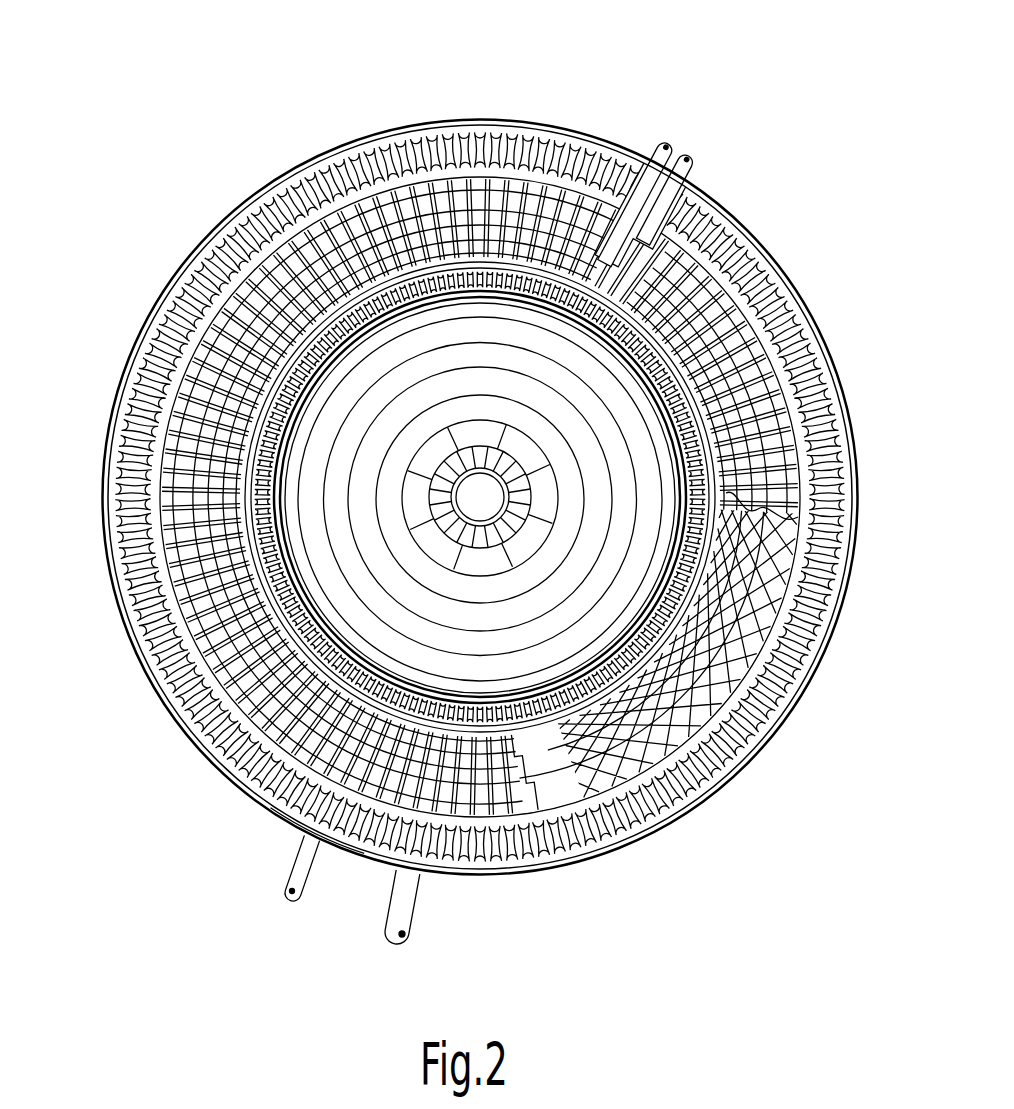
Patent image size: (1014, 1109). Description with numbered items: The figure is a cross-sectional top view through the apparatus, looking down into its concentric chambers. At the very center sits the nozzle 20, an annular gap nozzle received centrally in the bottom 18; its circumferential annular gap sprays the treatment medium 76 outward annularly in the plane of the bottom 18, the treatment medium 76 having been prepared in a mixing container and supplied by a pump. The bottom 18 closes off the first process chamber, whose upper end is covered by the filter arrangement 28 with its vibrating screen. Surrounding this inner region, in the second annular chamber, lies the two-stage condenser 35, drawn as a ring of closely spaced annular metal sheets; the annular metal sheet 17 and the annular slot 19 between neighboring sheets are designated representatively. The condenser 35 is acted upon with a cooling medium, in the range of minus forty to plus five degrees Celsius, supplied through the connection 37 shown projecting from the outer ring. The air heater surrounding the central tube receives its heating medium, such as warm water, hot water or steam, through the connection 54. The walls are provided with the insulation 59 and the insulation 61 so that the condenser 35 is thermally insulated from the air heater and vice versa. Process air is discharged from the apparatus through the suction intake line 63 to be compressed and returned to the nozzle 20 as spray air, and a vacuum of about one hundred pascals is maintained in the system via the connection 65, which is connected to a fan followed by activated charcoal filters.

The annular metal sheet 17 is at (490, 307).
The bottom 18 is at (607, 388).
The annular slot 19 is at (440, 312).
The nozzle 20 is at (488, 503).
The filter arrangement 28 is at (745, 770).
The two-stage condenser 35 is at (110, 587).
The connection 37 is at (303, 877).
The connection 54 is at (669, 146).
The insulation 59 is at (307, 830).
The insulation 61 is at (242, 790).
The suction intake line 63 is at (410, 908).
The connection 65 is at (693, 160).
The treatment medium 76 is at (207, 242).